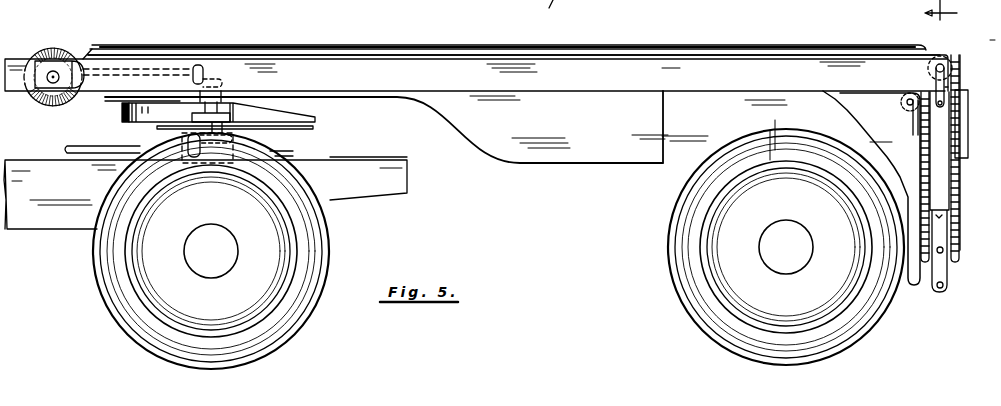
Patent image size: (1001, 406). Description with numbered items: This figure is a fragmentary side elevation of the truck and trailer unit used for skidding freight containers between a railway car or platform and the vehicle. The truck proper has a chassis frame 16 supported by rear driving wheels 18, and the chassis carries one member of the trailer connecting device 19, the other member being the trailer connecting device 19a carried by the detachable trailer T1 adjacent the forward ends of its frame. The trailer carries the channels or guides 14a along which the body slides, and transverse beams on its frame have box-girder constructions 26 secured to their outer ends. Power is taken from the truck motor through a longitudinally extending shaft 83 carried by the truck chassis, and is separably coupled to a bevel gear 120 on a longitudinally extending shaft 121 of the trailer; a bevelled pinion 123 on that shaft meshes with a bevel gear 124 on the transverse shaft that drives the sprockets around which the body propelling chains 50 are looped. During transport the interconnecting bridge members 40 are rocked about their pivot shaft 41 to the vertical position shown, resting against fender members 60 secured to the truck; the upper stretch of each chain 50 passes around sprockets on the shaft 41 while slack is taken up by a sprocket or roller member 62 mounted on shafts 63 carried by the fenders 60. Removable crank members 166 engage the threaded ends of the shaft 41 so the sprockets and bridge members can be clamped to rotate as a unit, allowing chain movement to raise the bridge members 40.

The channels or guides 14a is at (314, 46).
The box-girder constructions 26 is at (383, 70).
The bevelled pinion 123 is at (100, 48).
The bevel gear 124 is at (100, 35).
The longitudinally extending shaft 121 is at (152, 72).
The bevel gear 120 is at (198, 62).
The trailer connecting device 19a is at (384, 127).
The trailer connecting device 19 is at (122, 114).
The longitudinally extending shaft 83 is at (80, 145).
The chassis frame 16 is at (405, 181).
The rear driving wheels 18 is at (330, 232).
The trailer T1 is at (598, 155).
The fender members 60 is at (908, 112).
The sprocket or roller member 62 is at (901, 100).
The shafts 63 is at (909, 113).
The removable crank members 166 is at (936, 98).
The shaft 41 is at (940, 62).
The bridge mechanism 40 is at (938, 118).
The chains 50 is at (953, 62).